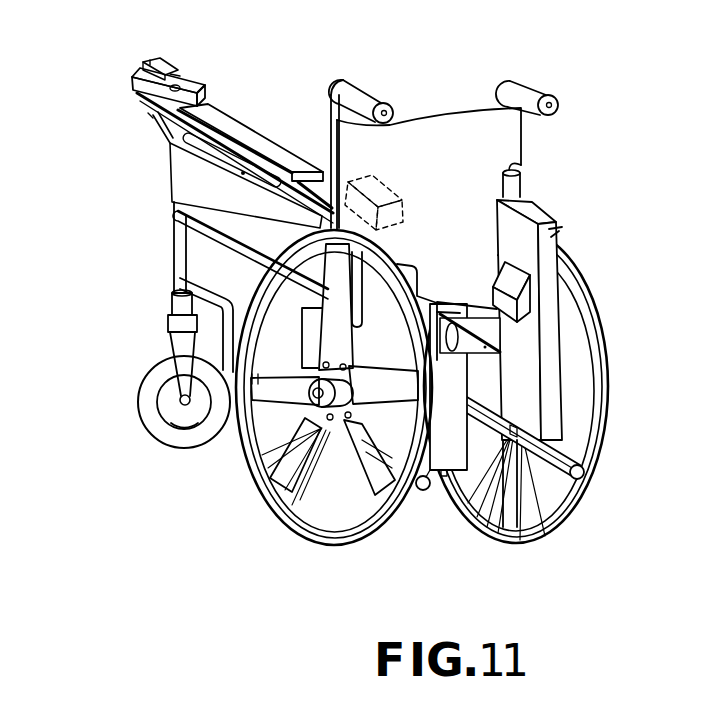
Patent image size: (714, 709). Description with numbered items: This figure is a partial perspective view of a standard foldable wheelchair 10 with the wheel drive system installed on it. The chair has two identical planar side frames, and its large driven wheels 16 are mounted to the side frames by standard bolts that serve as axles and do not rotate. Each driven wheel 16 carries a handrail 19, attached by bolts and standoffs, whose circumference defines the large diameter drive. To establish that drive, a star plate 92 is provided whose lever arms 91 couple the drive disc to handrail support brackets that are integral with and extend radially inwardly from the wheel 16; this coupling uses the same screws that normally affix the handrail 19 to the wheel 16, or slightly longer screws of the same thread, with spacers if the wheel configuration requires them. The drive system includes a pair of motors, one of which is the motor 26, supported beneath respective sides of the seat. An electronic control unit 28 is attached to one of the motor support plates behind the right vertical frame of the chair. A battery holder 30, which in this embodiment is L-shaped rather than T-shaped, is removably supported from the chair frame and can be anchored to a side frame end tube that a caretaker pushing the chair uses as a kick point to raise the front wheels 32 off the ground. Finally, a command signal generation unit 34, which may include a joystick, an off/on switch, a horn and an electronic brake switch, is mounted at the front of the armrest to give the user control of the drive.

The wheelchair 10 is at (438, 100).
The driven wheel 16 is at (528, 538).
The handrail 19 is at (292, 538).
The motor 26 is at (475, 472).
The electronic control unit 28 is at (563, 228).
The battery holder 30 is at (420, 486).
The front wheel 32 is at (143, 423).
The command signal generation unit 34 is at (132, 82).
The lever arm 91 is at (523, 480).
The star plate 92 is at (286, 386).